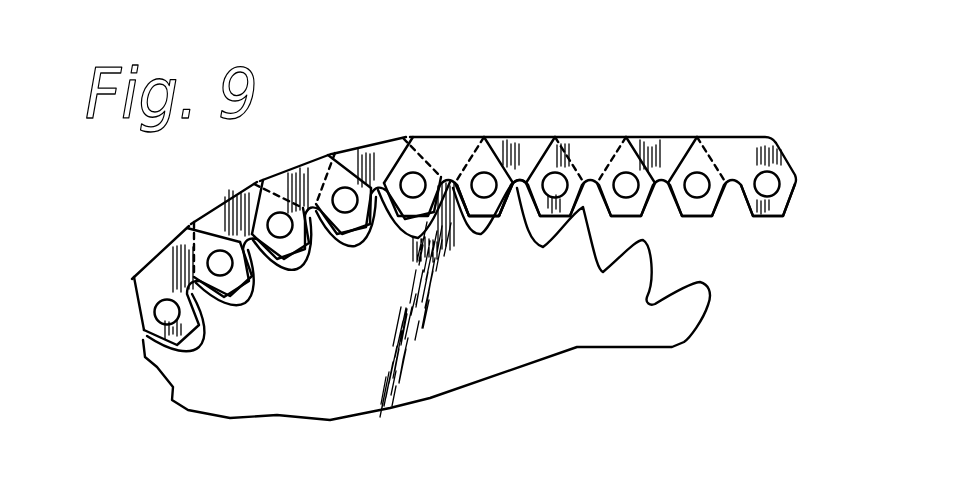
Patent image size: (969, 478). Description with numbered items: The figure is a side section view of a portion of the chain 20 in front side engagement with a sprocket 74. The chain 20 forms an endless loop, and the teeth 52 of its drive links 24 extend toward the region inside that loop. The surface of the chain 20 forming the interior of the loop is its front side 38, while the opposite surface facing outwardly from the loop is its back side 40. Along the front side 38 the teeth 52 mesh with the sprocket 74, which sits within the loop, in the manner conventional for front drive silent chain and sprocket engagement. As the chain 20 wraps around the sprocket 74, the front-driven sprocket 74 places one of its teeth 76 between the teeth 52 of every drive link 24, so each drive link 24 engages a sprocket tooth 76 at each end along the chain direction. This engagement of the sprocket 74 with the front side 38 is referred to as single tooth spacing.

The chain 20 is at (697, 96).
The back side 40 is at (738, 115).
The drive link 24 is at (525, 137).
The tooth 52 is at (482, 228).
The sprocket tooth 76 is at (523, 188).
The front side 38 is at (740, 222).
The sprocket 74 is at (687, 323).